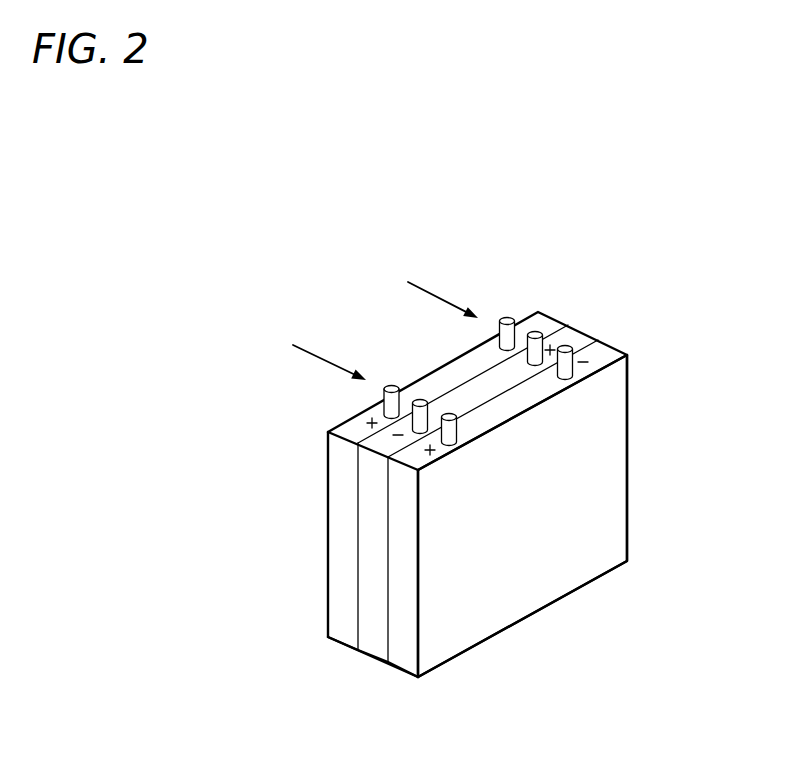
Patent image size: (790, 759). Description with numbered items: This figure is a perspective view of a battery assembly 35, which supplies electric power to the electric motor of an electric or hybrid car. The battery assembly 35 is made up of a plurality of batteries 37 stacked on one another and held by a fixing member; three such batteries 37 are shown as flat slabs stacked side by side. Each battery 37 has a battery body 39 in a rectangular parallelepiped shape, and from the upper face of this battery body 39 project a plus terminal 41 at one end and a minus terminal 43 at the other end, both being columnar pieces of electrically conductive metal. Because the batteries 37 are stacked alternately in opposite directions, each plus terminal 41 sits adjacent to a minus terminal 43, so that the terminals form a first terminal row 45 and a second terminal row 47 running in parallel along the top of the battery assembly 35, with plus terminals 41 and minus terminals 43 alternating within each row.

The battery assembly 35 is at (322, 249).
The battery 37 is at (400, 650).
The battery body 39 is at (608, 486).
The plus terminal 41 is at (386, 384).
The minus terminal 43 is at (421, 399).
The first terminal row 45 is at (442, 283).
The second terminal row 47 is at (321, 348).